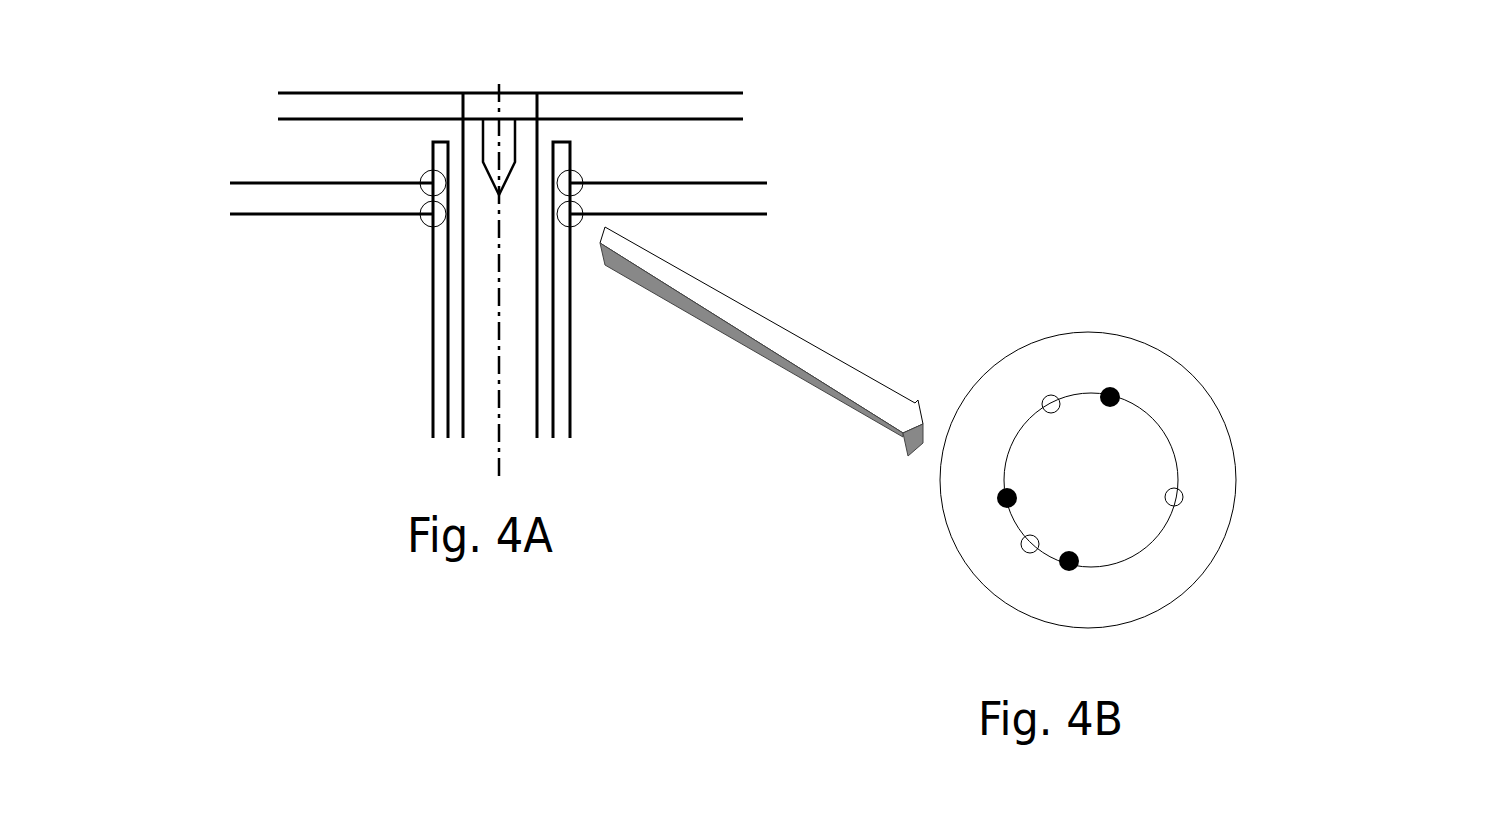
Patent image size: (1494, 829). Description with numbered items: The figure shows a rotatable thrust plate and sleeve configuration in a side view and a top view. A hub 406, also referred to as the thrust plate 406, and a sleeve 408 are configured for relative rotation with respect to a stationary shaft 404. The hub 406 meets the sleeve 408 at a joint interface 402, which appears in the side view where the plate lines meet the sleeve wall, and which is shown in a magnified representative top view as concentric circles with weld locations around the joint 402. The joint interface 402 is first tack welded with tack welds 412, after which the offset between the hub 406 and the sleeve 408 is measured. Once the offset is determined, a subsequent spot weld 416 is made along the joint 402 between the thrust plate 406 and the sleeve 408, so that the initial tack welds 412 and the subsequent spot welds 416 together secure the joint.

In FIG. 4A, the joint interface 402 is at (433, 213).
In FIG. 4B, the joint interface 402 is at (1167, 438).
In FIG. 4A, the stationary shaft 404 is at (482, 427).
In FIG. 4A, the hub 406 is at (338, 198).
In FIG. 4B, the hub 406 is at (1095, 482).
In FIG. 4A, the sleeve 408 is at (560, 156).
In FIG. 4B, the sleeve 408 is at (1212, 473).
In FIG. 4B, the tack weld 412 is at (1038, 542).
In FIG. 4B, the subsequent spot weld 416 is at (1100, 392).